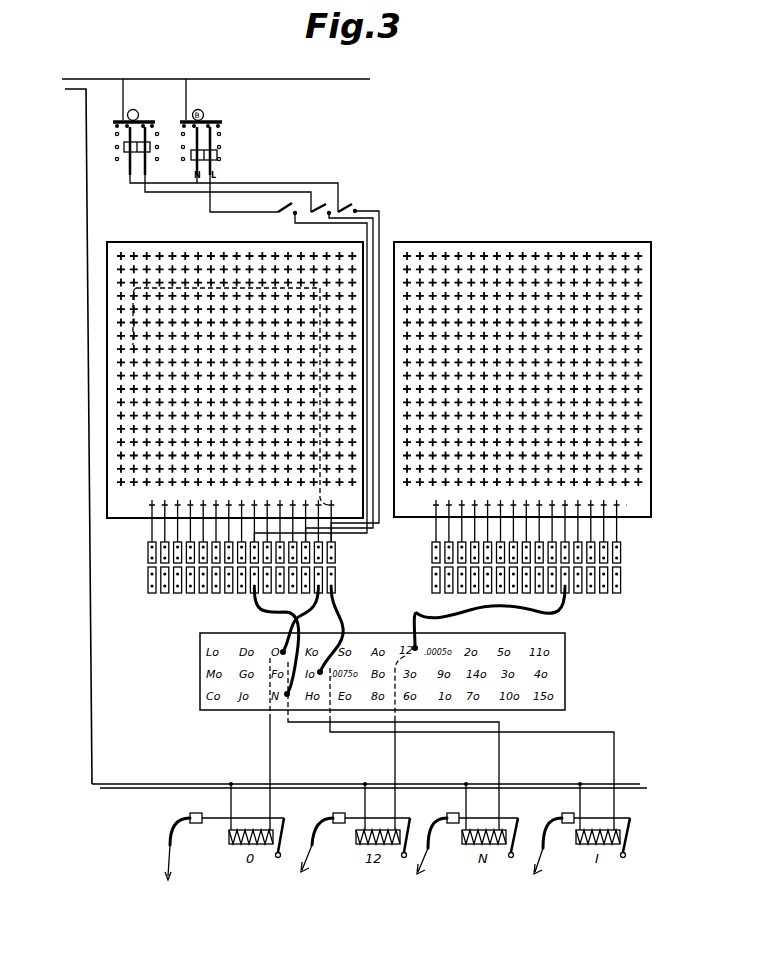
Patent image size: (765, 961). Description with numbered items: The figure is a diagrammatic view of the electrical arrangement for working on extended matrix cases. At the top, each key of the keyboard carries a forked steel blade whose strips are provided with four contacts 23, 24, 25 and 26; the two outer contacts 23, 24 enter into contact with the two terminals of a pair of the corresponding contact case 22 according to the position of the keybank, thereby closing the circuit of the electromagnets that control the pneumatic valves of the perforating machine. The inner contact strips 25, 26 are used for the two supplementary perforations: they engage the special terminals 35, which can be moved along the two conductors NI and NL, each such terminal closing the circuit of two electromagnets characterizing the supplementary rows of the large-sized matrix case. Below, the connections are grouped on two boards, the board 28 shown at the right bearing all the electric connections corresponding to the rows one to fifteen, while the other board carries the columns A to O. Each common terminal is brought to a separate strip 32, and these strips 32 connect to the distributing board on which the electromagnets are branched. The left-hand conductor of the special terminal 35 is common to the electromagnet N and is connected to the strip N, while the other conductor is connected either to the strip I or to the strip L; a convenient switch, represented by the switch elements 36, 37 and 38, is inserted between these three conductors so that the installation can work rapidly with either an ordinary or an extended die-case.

The contact case 22 is at (107, 352).
The outer contact 23 is at (115, 128).
The outer contact 24 is at (154, 129).
The contact strip 25 is at (115, 122).
The contact strip 26 is at (138, 121).
The board 28 is at (462, 242).
The strip 32 is at (431, 575).
The special terminal 35 is at (128, 152).
The switch N 36 is at (355, 361).
The switch I 37 is at (337, 364).
The switch L 38 is at (310, 368).